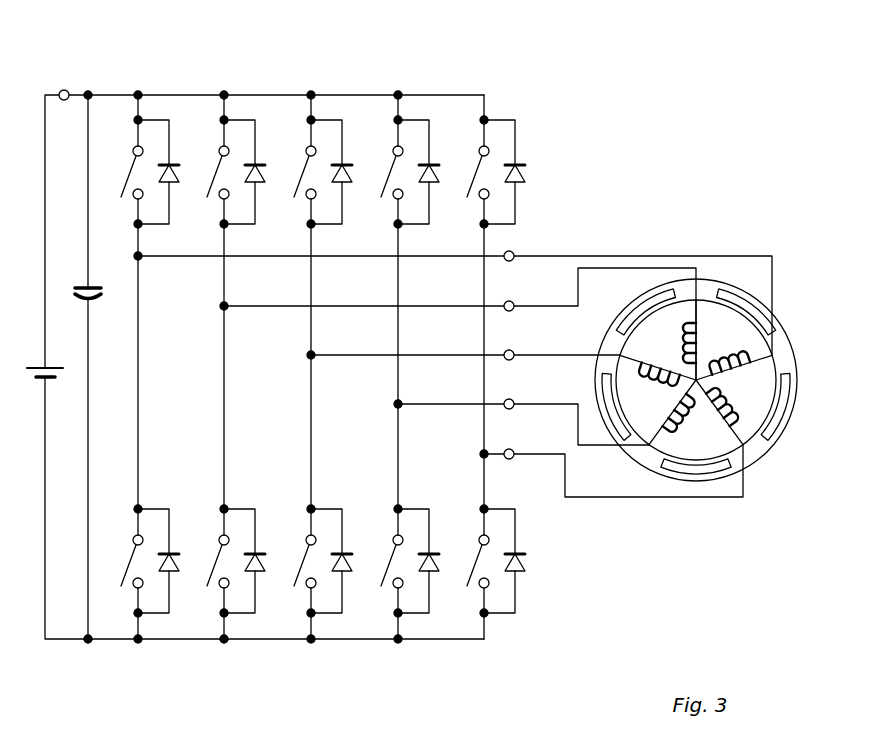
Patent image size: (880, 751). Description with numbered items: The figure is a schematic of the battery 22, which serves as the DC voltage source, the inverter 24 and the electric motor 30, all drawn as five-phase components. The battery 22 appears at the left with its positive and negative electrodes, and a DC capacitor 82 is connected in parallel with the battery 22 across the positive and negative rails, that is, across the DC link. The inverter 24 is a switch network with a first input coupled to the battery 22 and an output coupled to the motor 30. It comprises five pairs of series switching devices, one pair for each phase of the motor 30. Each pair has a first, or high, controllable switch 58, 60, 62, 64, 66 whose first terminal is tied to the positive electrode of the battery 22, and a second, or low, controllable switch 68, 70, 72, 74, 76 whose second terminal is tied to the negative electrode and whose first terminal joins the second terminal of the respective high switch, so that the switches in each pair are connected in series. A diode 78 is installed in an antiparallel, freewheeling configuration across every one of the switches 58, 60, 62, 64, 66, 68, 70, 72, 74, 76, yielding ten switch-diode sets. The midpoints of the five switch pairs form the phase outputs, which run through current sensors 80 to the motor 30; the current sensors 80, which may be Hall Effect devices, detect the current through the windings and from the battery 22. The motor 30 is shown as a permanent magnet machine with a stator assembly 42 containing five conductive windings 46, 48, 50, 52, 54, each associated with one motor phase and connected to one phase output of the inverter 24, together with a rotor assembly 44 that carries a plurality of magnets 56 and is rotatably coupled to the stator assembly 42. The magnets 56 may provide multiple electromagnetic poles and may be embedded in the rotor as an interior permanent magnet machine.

The battery 22 is at (42, 377).
The inverter 24 is at (531, 83).
The electric motor 30 is at (733, 243).
The stator assembly 42 is at (764, 460).
The rotor assembly 44 is at (705, 289).
The winding 46 is at (733, 357).
The winding 48 is at (680, 347).
The winding 50 is at (650, 382).
The winding 52 is at (684, 416).
The winding 54 is at (731, 406).
The magnets 56 is at (644, 309).
The first controllable switch 58 is at (128, 191).
The first controllable switch 60 is at (214, 191).
The first controllable switch 62 is at (301, 191).
The first controllable switch 64 is at (388, 191).
The first controllable switch 66 is at (474, 191).
The second controllable switch 68 is at (128, 580).
The second controllable switch 70 is at (214, 580).
The second controllable switch 72 is at (301, 580).
The second controllable switch 74 is at (388, 580).
The second controllable switch 76 is at (474, 580).
The diode 78 is at (181, 183).
The current sensor 80 is at (64, 89).
The DC capacitor 82 is at (80, 286).